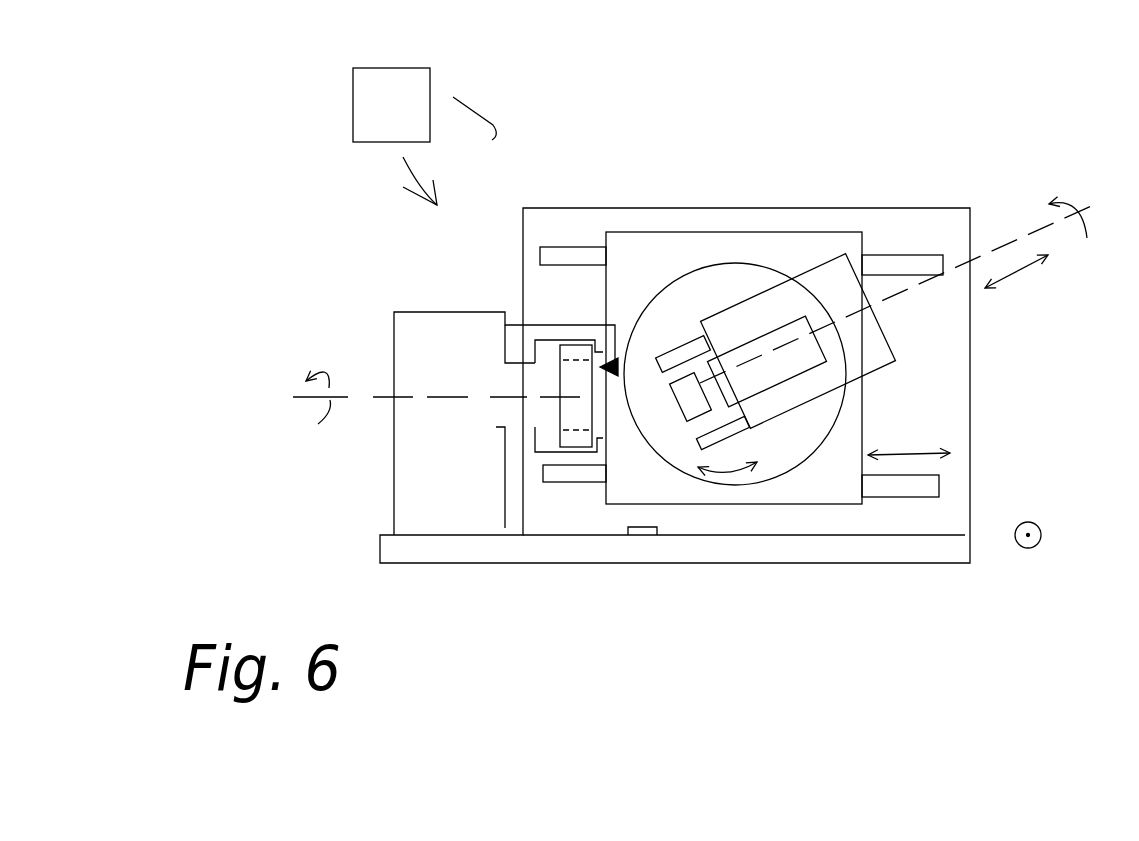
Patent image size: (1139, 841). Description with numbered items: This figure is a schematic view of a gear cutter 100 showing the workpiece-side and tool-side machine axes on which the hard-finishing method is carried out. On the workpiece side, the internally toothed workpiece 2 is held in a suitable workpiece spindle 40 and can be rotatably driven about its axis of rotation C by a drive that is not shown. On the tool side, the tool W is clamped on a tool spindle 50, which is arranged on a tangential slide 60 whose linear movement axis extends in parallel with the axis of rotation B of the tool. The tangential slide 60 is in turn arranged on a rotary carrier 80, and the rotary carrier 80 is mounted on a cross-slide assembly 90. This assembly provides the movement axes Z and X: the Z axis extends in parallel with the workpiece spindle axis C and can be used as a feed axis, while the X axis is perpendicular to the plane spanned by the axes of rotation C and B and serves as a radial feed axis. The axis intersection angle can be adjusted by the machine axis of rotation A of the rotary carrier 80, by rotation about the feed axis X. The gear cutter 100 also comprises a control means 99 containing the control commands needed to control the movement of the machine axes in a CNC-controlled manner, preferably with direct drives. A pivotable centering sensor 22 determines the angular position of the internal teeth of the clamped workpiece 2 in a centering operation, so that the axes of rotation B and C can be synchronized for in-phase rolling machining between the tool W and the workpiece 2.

The internally toothed workpiece 2 is at (570, 413).
The pivotable centering sensor 22 is at (614, 389).
The workpiece spindle 40 is at (548, 352).
The tool spindle 50 is at (702, 370).
The tangential slide 60 is at (870, 358).
The rotary carrier 80 is at (727, 287).
The cross-slide assembly 90 is at (987, 486).
The control means 99 is at (424, 136).
The gear cutter 100 is at (993, 93).